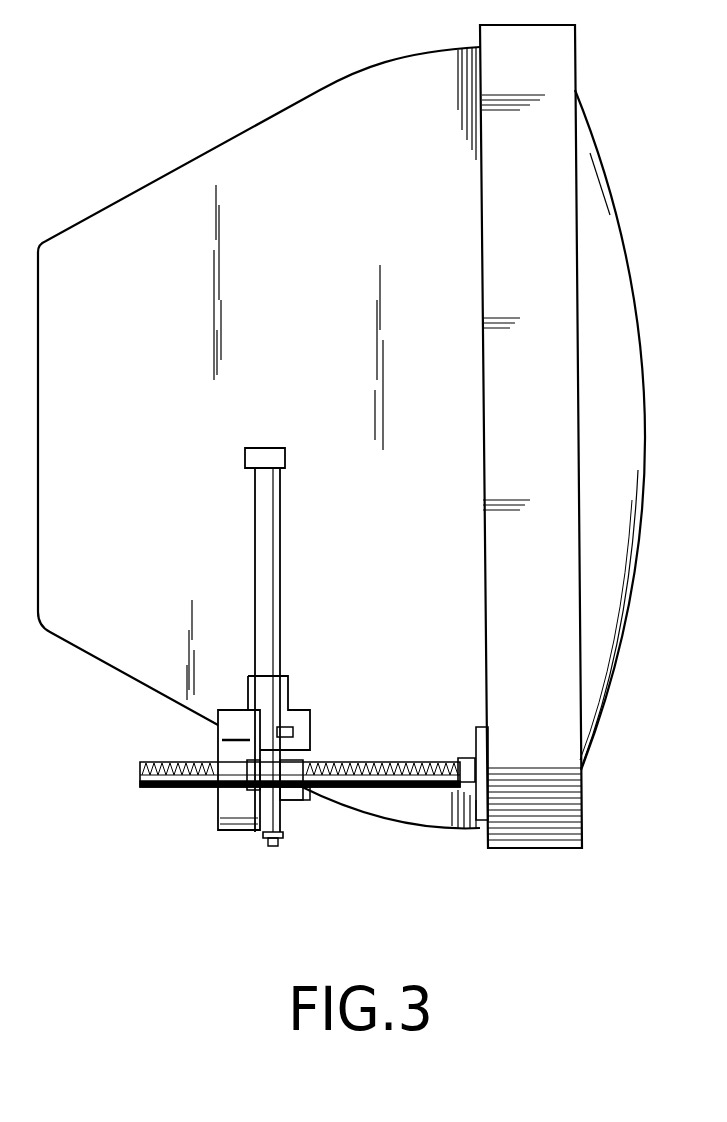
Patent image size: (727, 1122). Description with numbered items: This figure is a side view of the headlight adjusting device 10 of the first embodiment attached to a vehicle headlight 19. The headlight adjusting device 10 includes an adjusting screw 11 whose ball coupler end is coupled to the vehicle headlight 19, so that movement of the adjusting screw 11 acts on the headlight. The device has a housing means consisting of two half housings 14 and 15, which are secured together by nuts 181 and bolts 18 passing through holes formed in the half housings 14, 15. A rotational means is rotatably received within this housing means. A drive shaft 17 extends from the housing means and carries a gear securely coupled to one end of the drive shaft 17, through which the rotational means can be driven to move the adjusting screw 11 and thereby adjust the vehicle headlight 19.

The headlight adjusting device 10 is at (334, 592).
The adjusting screw 11 is at (385, 762).
The half housing 14 is at (297, 714).
The half housing 15 is at (233, 715).
The drive shaft 17 is at (268, 553).
The bolt 18 is at (297, 800).
The nut 181 is at (248, 798).
The vehicle headlight 19 is at (558, 140).